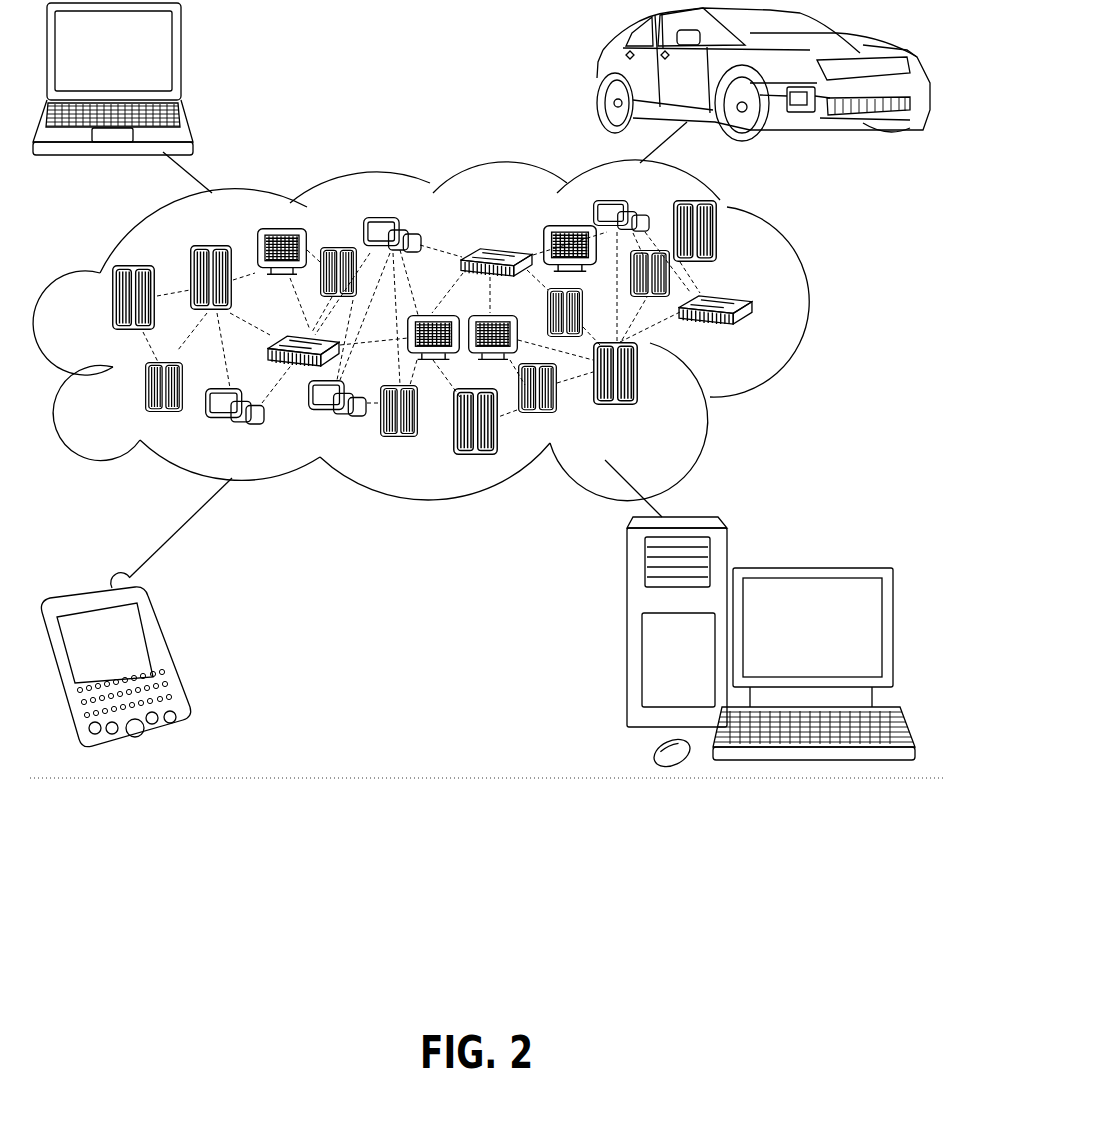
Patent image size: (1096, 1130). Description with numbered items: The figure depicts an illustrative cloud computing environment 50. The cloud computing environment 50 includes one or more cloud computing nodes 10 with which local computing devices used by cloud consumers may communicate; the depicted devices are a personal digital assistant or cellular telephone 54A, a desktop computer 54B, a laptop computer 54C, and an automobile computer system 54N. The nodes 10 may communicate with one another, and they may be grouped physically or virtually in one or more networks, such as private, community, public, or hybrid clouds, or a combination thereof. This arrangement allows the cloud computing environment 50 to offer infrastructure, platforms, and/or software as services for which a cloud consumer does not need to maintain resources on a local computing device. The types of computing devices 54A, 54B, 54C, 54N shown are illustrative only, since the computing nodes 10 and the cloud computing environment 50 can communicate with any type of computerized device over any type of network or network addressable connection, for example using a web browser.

The cloud computing environment 50 is at (812, 308).
The cloud computing nodes 10 is at (753, 333).
The personal digital assistant (PDA) or cellular telephone 54A is at (170, 653).
The desktop computer 54B is at (810, 568).
The laptop computer 54C is at (182, 58).
The automobile computer system 54N is at (600, 78).